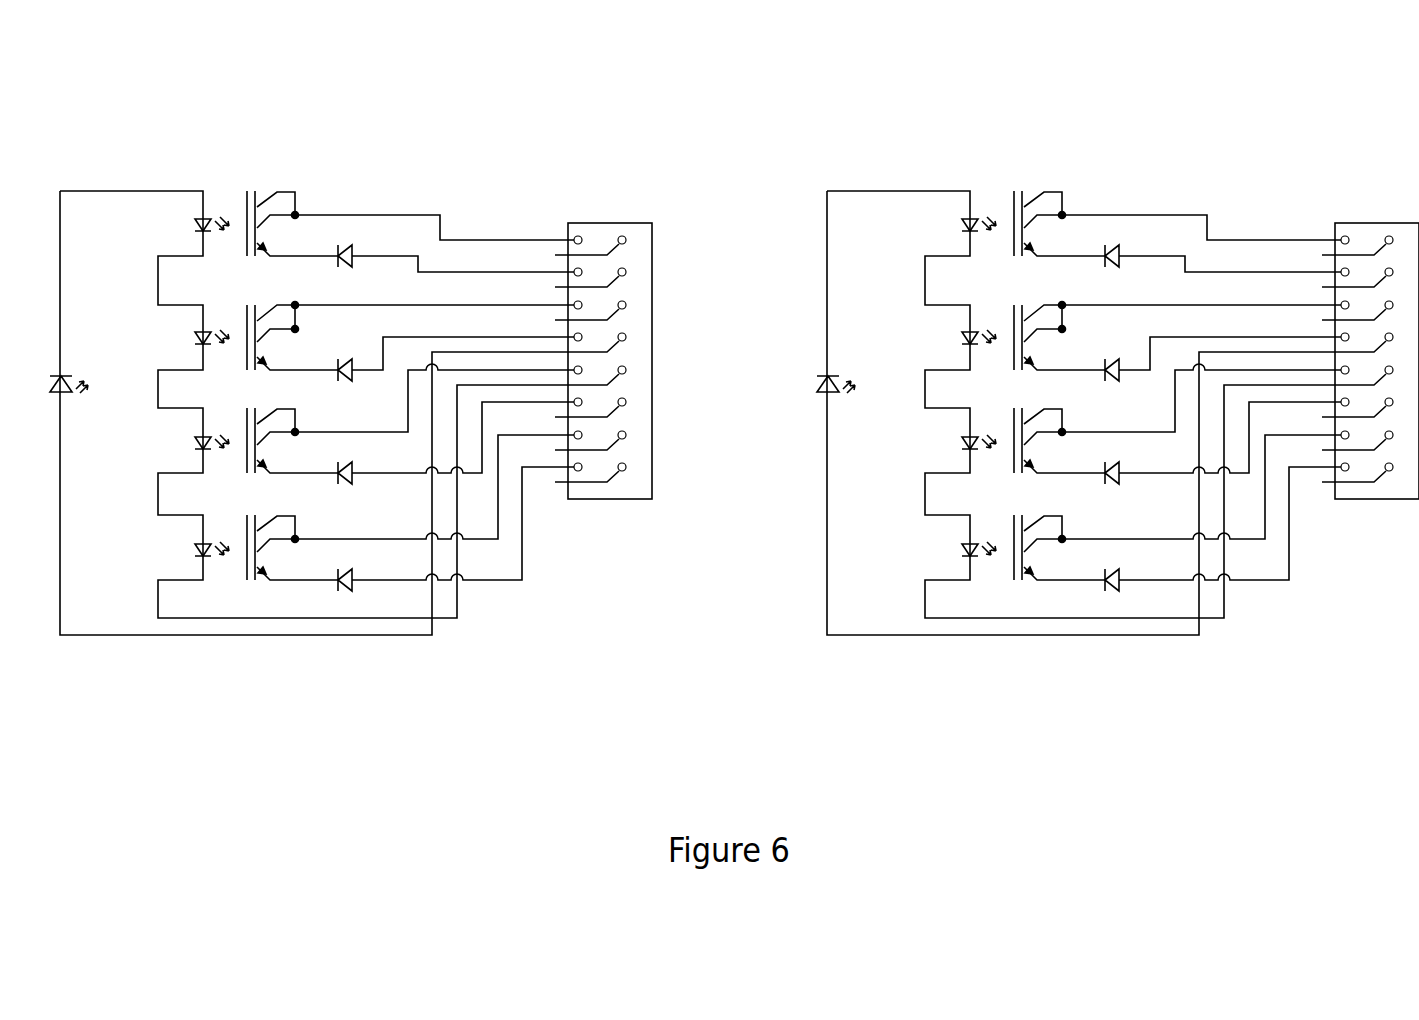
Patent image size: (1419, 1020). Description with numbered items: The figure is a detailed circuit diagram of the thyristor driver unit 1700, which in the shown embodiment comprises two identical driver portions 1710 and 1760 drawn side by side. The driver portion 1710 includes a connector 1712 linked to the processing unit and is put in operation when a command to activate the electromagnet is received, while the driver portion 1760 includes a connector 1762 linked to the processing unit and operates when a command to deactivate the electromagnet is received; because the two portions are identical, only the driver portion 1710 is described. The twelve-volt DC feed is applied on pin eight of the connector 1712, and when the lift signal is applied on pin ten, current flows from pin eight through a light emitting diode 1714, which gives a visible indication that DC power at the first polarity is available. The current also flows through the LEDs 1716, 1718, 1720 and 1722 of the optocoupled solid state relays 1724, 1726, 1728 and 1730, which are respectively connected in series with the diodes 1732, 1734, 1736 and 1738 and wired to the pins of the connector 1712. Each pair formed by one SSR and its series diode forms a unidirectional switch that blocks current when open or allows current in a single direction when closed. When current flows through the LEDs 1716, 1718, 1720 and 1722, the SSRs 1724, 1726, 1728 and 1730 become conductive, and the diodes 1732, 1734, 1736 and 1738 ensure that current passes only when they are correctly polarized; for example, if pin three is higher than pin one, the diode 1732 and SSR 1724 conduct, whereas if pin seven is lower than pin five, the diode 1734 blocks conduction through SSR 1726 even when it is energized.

The thyristor driver unit 1700 is at (656, 37).
The driver portion 1710 is at (304, 125).
The driver portion 1760 is at (1044, 125).
The connector 1712 is at (617, 222).
The connector 1762 is at (1357, 333).
The light emitting diode 1714 is at (63, 374).
The LED 1716 is at (200, 222).
The LED 1718 is at (200, 334).
The LED 1720 is at (200, 440).
The LED 1722 is at (200, 547).
The optocoupled solid state relay 1724 is at (296, 204).
The optocoupled solid state relay 1726 is at (298, 332).
The optocoupled solid state relay 1728 is at (298, 430).
The optocoupled solid state relay 1730 is at (298, 536).
The diode 1732 is at (348, 262).
The diode 1734 is at (346, 372).
The diode 1736 is at (346, 478).
The diode 1738 is at (346, 584).